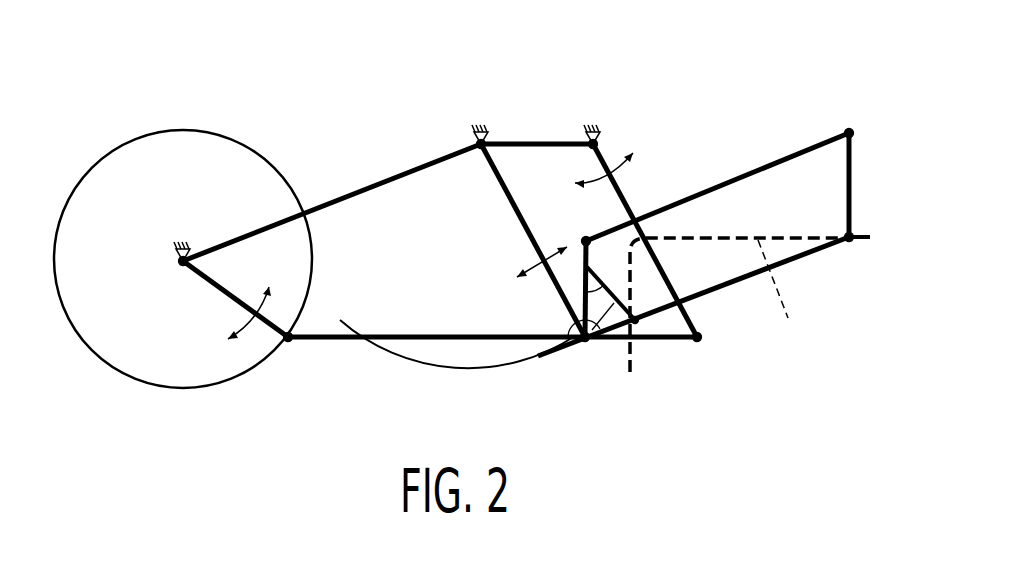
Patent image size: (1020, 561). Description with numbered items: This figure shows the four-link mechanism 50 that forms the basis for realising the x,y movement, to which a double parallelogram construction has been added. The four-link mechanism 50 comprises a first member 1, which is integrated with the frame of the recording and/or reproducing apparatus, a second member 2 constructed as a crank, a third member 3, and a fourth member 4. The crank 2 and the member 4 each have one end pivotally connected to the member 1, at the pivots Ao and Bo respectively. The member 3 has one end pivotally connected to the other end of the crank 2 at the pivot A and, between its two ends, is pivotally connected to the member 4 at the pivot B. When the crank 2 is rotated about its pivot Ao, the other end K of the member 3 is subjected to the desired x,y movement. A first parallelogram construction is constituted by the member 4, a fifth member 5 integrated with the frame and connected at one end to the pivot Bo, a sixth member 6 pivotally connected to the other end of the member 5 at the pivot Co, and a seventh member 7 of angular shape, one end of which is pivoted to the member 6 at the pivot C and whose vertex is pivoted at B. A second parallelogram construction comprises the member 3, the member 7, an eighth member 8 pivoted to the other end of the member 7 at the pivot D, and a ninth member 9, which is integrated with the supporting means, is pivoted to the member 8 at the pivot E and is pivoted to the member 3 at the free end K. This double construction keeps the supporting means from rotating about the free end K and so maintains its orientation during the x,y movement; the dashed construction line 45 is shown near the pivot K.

The first member 1 is at (350, 190).
The second member 2 is at (240, 300).
The third member 3 is at (418, 338).
The fourth member 4 is at (514, 205).
The fifth member 5 is at (536, 141).
The sixth member 6 is at (628, 207).
The seventh member 7 is at (657, 342).
The eighth member 8 is at (781, 160).
The ninth member 9 is at (850, 190).
The reference angle / construction line 45 is at (782, 294).
The four-link mechanism 50 is at (366, 353).
The pivot of the crank to the first member Ao is at (176, 262).
The pivot of the fourth member to the first member Bo is at (478, 154).
The pivot between the sixth member and the frame Co is at (602, 146).
The pivot between the third member and the crank A is at (290, 345).
The pivot between the third and fourth members B is at (589, 345).
The pivot between the sixth and seventh members C is at (700, 343).
The pivot between the seventh and eighth members D is at (582, 236).
The pivot between the eighth and ninth members E is at (849, 130).
The free end of the third member K is at (849, 244).